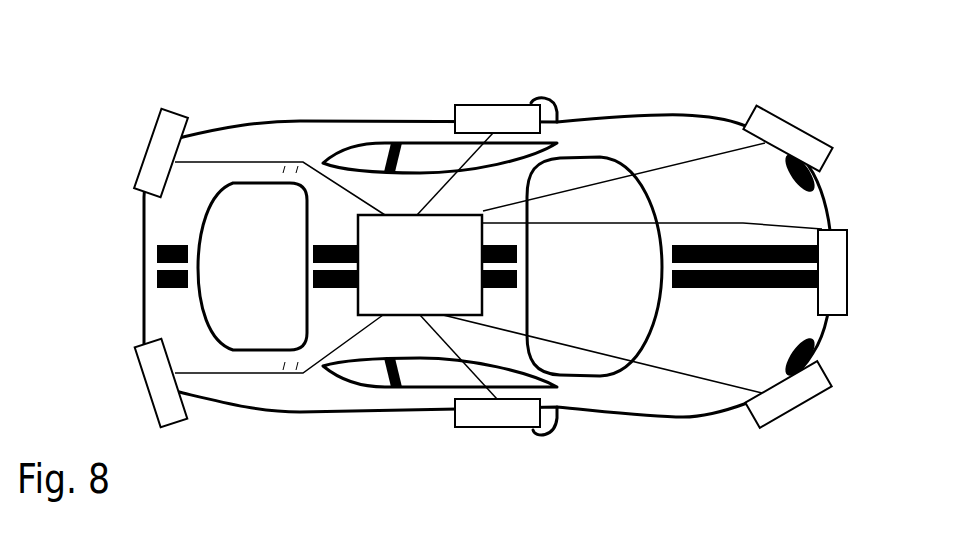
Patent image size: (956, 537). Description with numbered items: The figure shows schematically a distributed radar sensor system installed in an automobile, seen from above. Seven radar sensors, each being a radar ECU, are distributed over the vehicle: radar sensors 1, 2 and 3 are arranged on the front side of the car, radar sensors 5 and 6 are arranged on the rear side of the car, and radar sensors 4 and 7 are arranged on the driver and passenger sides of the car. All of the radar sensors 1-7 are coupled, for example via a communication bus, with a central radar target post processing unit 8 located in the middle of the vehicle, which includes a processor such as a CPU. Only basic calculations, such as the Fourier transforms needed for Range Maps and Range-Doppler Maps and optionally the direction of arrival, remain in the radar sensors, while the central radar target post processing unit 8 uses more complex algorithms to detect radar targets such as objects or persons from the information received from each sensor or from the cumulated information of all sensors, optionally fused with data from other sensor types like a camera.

The radar sensor 1 is at (803, 408).
The radar sensor 2 is at (845, 263).
The radar sensor 3 is at (791, 119).
The radar sensor 4 is at (497, 103).
The radar sensor 5 is at (150, 147).
The radar sensor 6 is at (150, 390).
The radar sensor 7 is at (500, 426).
The central radar target post processing unit 8 is at (420, 265).